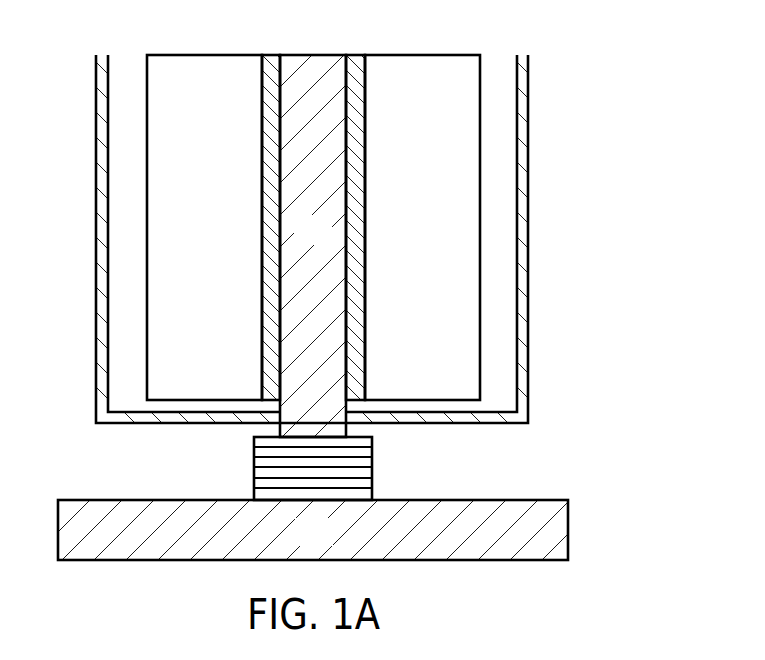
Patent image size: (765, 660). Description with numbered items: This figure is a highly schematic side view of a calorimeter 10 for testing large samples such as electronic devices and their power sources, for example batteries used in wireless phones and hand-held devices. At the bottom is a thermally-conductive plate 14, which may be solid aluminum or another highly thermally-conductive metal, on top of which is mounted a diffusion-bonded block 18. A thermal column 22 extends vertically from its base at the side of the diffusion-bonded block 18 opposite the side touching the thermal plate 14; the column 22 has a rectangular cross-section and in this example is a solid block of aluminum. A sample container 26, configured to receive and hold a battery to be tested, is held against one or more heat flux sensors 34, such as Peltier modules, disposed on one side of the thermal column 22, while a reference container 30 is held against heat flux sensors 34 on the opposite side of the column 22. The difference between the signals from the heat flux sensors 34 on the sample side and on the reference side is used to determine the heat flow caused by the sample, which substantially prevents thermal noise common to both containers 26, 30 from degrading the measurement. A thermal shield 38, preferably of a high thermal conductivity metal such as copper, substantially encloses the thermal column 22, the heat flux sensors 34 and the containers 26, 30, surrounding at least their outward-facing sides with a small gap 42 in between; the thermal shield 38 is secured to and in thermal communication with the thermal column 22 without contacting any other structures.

The calorimeter 10 is at (636, 76).
The thermally-conductive plate 14 is at (330, 543).
The diffusion-bonded block 18 is at (373, 470).
The thermal column 22 is at (332, 241).
The sample container 26 is at (223, 241).
The reference container 30 is at (439, 241).
The heat flux sensors 34 is at (272, 55).
The thermal shield 38 is at (96, 218).
The gap 42 is at (120, 56).